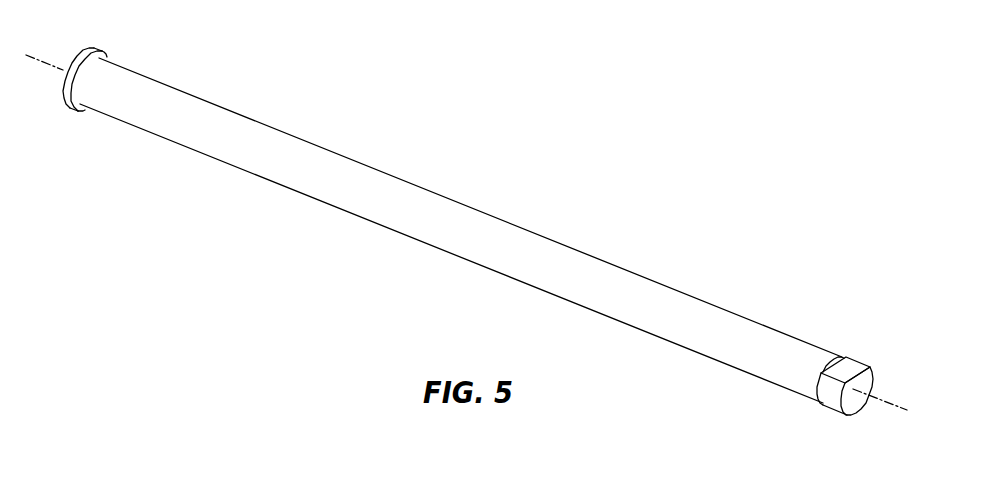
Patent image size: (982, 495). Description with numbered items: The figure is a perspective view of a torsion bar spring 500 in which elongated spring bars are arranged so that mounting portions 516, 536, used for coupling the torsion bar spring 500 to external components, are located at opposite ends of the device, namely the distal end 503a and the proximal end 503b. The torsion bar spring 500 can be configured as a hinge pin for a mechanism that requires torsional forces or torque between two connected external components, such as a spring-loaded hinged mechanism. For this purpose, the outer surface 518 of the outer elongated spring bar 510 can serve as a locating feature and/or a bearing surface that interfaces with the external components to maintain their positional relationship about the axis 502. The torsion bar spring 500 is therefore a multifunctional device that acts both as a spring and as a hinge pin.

The torsion bar spring 500 is at (466, 241).
The axis 502 is at (876, 402).
The distal end 503a is at (828, 382).
The proximal end 503b is at (133, 61).
The outer elongated spring bar 510 is at (461, 230).
The mounting portion 516 is at (79, 59).
The outer surface 518 is at (399, 195).
The mounting portion 536 is at (851, 366).